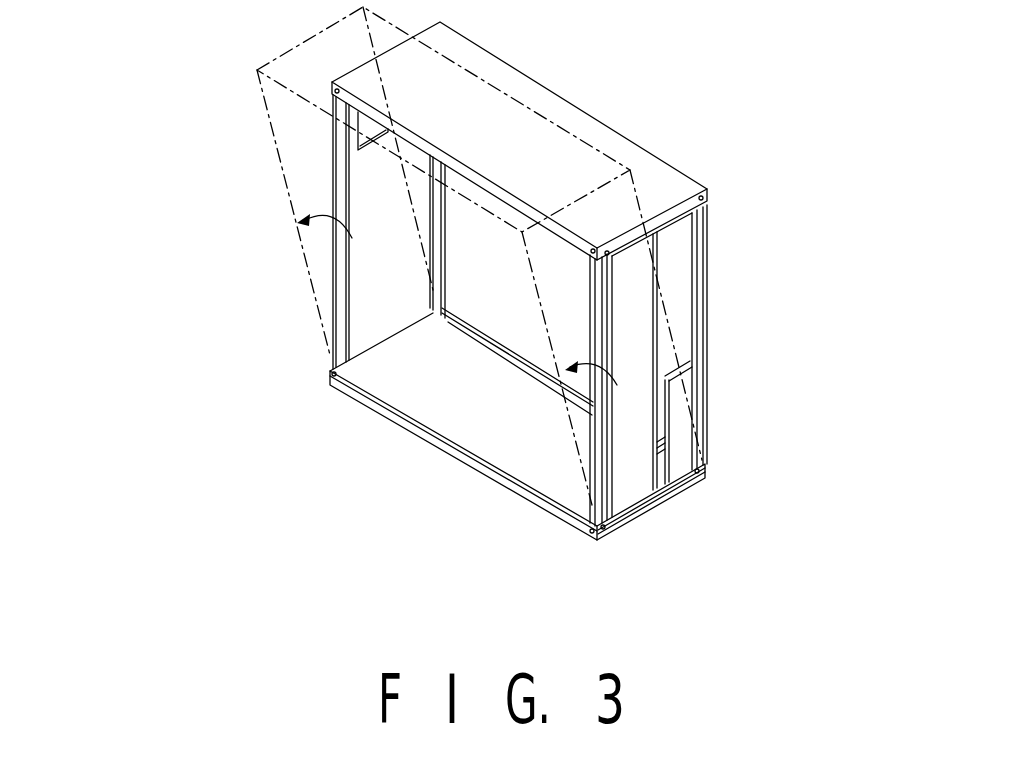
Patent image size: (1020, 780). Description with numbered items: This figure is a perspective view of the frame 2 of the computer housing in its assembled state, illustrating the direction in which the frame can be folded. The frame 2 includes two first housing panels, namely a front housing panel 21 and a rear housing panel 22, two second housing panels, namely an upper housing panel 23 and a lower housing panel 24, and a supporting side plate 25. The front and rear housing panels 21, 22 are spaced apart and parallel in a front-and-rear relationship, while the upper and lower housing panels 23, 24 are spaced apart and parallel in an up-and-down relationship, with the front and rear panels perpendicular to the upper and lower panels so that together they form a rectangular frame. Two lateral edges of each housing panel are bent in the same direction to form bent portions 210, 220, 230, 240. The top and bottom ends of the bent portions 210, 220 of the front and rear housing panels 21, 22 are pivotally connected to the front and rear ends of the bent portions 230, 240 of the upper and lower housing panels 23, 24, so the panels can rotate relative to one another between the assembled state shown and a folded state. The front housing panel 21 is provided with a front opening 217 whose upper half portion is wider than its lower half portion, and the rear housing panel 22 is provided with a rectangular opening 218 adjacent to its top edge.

The frame 2 is at (750, 194).
The front housing panel 21 is at (663, 320).
The bent portion 210 is at (626, 487).
The front opening 217 is at (673, 250).
The rectangular opening 218 is at (375, 133).
The rear housing panel 22 is at (288, 175).
The bent portion 220 is at (342, 327).
The upper housing panel 23 is at (477, 115).
The bent portion 230 is at (502, 198).
The lower housing panel 24 is at (447, 415).
The bent portion 240 is at (513, 358).
The supporting side plate 25 is at (618, 503).